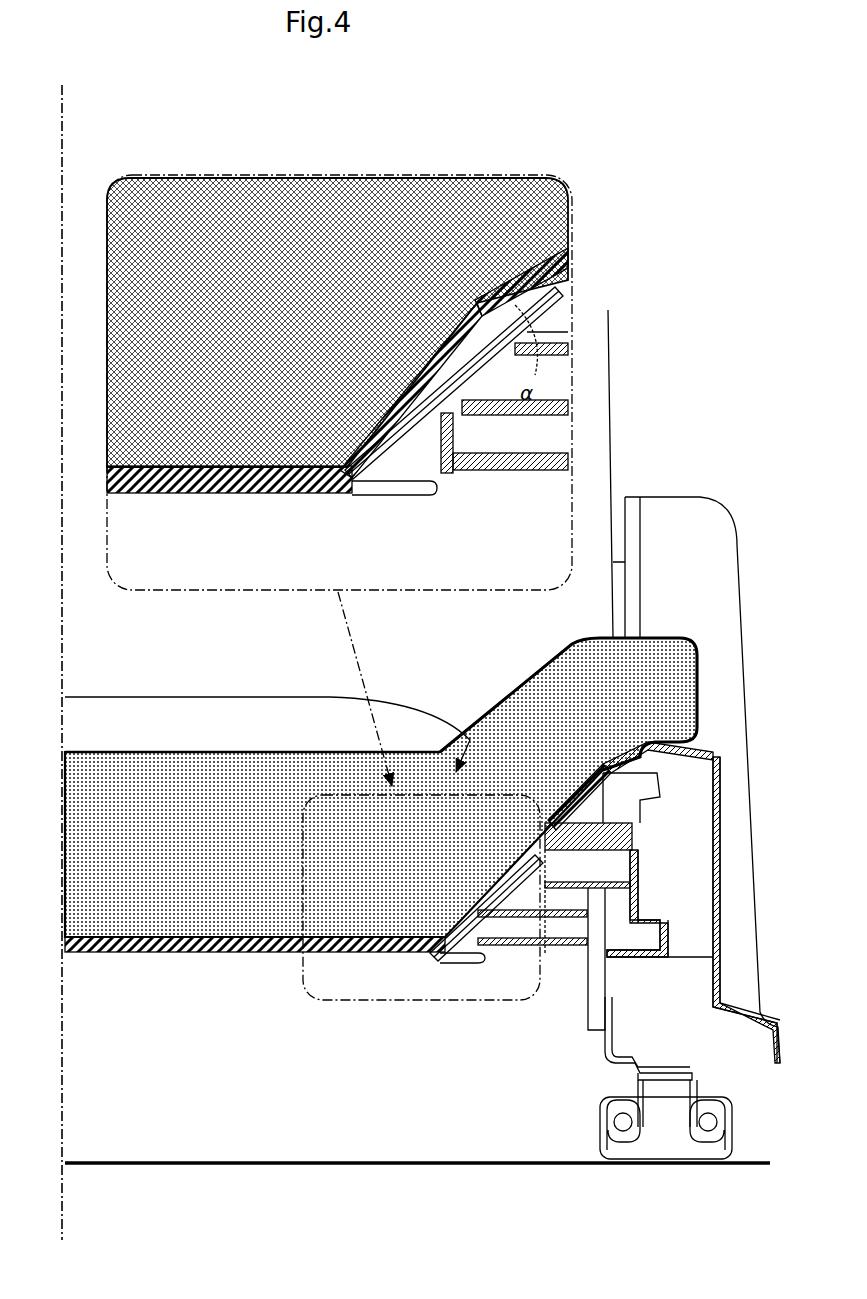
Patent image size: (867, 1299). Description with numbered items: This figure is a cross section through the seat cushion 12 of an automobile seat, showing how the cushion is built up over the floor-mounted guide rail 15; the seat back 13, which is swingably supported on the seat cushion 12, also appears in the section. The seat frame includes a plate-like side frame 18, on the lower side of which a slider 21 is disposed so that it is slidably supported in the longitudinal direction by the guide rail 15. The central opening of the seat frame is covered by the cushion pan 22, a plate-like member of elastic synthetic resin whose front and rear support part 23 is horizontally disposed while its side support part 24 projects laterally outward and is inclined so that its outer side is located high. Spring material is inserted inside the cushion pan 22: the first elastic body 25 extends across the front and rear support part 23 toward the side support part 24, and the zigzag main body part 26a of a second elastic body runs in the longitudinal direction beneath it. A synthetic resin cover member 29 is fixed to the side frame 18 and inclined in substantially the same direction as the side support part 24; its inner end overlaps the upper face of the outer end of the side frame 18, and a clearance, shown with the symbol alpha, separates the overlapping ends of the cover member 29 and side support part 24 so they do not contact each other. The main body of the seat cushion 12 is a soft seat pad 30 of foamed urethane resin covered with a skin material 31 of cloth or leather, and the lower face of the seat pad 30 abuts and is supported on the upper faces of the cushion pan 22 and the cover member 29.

The seat cushion 12 is at (147, 742).
The seat back 13 is at (626, 419).
The guide rail 15 is at (603, 1120).
The side frame 18 is at (480, 458).
The slider 21 is at (645, 1070).
The cushion pan 22 is at (240, 518).
The front and rear support part 23 is at (290, 494).
The side support part 24 is at (527, 332).
The first elastic body 25 is at (447, 474).
The main body part 26a is at (433, 488).
The cover member 29 is at (527, 262).
The seat pad 30 is at (385, 188).
The skin material 31 is at (237, 752).